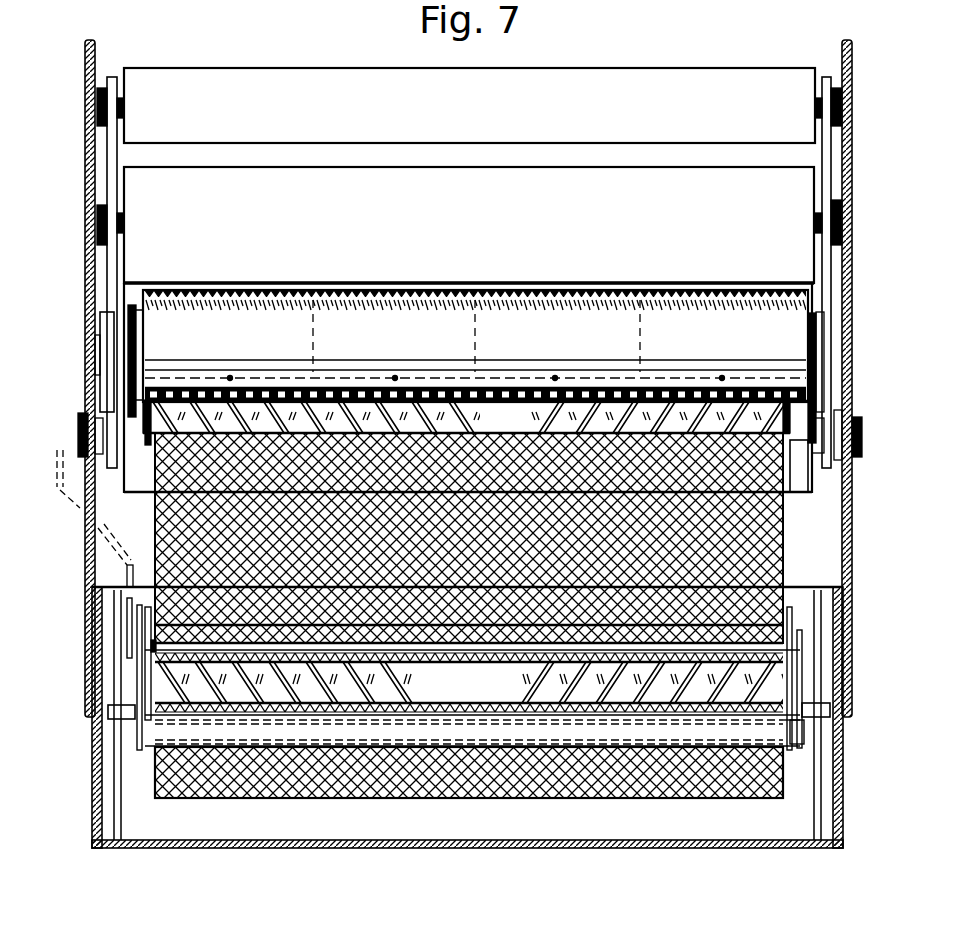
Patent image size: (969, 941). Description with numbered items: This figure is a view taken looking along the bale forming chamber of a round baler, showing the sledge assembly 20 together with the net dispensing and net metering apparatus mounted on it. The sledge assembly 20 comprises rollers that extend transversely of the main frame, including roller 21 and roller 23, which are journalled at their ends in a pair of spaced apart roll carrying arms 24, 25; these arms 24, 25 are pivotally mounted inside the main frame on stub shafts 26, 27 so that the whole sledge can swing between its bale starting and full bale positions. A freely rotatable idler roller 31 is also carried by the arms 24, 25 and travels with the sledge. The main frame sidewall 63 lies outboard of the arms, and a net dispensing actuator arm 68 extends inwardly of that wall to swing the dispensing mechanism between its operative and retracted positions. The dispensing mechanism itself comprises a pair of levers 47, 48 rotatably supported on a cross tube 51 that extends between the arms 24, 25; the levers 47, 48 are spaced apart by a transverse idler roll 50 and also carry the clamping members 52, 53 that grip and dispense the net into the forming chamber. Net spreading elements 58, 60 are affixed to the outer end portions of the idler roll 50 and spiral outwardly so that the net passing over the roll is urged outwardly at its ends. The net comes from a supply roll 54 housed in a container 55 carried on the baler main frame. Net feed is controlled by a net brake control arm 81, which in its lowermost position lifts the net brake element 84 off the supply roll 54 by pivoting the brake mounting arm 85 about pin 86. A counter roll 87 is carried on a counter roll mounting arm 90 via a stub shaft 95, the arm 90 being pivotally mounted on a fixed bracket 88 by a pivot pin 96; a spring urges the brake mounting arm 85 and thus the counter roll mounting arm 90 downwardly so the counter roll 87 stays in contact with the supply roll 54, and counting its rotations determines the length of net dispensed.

The sledge assembly 20 is at (100, 270).
The roller 21 is at (337, 223).
The roller 23 is at (797, 482).
The roll carrying arm 24 is at (112, 170).
The roll carrying arm 25 is at (826, 158).
The stub shaft 26 is at (77, 440).
The stub shaft 27 is at (862, 432).
The idler roller 31 is at (661, 113).
The lever 47 is at (148, 445).
The lever 48 is at (797, 442).
The idler roll 50 is at (483, 420).
The cross tube 51 is at (130, 300).
The clamping member 52 is at (332, 349).
The clamping member 53 is at (430, 378).
The supply roll 54 is at (620, 800).
The container 55 is at (92, 815).
The net spreading element 58 is at (437, 413).
The net spreading element 60 is at (658, 395).
The sidewall 63 is at (86, 66).
The net dispensing actuator arm 68 is at (132, 373).
The net brake control arm 81 is at (82, 513).
The net brake element 84 is at (750, 733).
The brake mounting arm 85 is at (137, 690).
The pin 86 is at (140, 668).
The counter roll 87 is at (457, 687).
The fixed bracket 88 is at (117, 772).
The counter roll mounting arm 90 is at (140, 627).
The stub shaft 95 is at (352, 662).
The pivot pin 96 is at (550, 663).